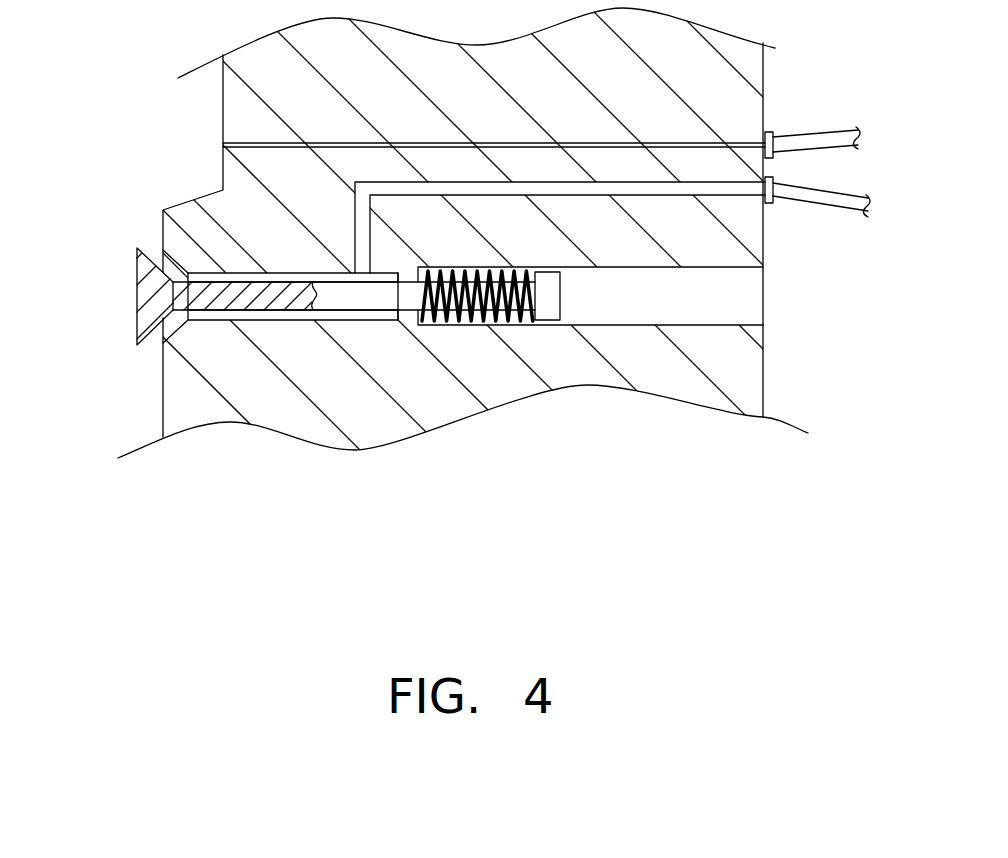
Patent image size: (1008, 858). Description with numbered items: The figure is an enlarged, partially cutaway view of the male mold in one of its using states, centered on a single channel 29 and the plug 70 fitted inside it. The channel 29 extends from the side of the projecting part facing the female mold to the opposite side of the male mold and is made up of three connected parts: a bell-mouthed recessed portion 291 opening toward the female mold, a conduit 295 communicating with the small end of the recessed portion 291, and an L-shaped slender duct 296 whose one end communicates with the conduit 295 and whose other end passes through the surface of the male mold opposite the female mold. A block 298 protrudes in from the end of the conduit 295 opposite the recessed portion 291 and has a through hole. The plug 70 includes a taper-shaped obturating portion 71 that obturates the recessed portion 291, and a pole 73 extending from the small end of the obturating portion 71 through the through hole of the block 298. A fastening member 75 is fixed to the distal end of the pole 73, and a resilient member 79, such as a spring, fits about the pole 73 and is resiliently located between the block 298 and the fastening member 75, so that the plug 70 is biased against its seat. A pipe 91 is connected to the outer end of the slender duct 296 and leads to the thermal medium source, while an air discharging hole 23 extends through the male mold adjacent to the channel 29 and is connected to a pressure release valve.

The air discharging hole 23 is at (727, 145).
The channel 29 is at (177, 205).
The plug 70 is at (300, 372).
The obturating portion 71 is at (145, 290).
The pole 73 is at (262, 293).
The fastening member 75 is at (553, 313).
The resilient member 79 is at (512, 320).
The pipe 91 is at (818, 142).
The recessed portion 291 is at (180, 270).
The conduit 295 is at (362, 316).
The slender duct 296 is at (733, 193).
The block 298 is at (412, 317).